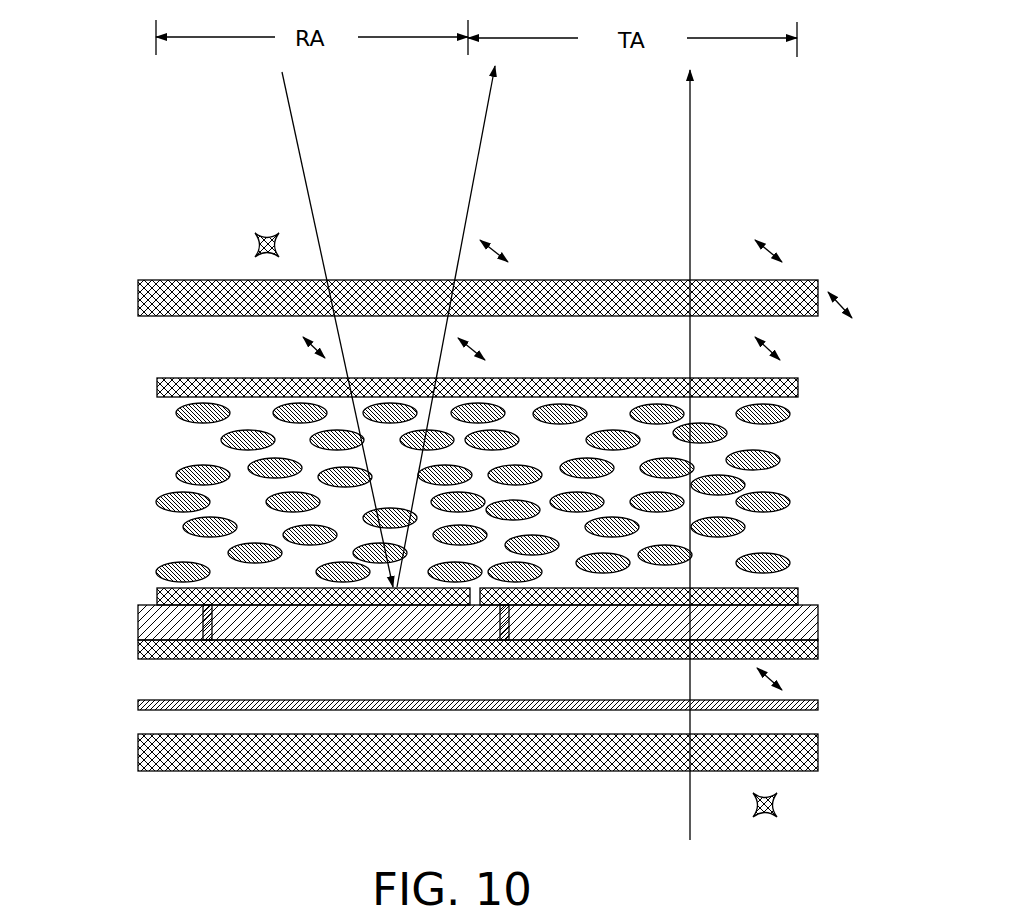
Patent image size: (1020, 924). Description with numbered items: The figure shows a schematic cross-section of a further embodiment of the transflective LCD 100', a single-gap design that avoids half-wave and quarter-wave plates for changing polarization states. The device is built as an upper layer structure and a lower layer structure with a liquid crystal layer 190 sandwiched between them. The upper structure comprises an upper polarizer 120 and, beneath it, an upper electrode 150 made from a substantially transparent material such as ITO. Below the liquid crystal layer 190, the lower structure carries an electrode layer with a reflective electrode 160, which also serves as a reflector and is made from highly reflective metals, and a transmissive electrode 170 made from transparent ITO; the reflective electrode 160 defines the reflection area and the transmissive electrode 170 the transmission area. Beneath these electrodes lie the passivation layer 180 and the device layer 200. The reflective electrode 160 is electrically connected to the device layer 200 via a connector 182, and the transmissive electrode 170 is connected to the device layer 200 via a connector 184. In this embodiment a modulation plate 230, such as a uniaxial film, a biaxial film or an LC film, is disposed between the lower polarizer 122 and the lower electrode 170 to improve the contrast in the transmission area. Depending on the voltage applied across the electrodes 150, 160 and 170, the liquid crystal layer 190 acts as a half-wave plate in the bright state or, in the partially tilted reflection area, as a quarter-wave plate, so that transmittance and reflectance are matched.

The transflective LCD 100' is at (470, 443).
The upper polarizer 120 is at (138, 306).
The lower polarizer 122 is at (138, 752).
The upper electrode 150 is at (157, 388).
The reflective electrode 160 is at (157, 596).
The transmissive electrode 170 is at (798, 600).
The passivation layer 180 is at (440, 644).
The connector 182 is at (212, 622).
The connector 184 is at (509, 622).
The liquid crystal layer 190 is at (147, 510).
The device layer 200 is at (138, 650).
The modulation plate 230 is at (818, 705).